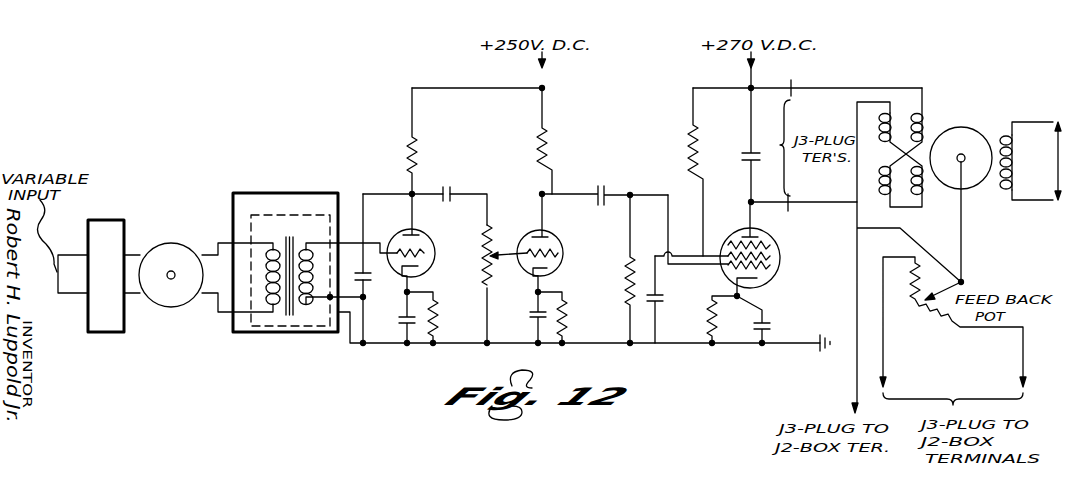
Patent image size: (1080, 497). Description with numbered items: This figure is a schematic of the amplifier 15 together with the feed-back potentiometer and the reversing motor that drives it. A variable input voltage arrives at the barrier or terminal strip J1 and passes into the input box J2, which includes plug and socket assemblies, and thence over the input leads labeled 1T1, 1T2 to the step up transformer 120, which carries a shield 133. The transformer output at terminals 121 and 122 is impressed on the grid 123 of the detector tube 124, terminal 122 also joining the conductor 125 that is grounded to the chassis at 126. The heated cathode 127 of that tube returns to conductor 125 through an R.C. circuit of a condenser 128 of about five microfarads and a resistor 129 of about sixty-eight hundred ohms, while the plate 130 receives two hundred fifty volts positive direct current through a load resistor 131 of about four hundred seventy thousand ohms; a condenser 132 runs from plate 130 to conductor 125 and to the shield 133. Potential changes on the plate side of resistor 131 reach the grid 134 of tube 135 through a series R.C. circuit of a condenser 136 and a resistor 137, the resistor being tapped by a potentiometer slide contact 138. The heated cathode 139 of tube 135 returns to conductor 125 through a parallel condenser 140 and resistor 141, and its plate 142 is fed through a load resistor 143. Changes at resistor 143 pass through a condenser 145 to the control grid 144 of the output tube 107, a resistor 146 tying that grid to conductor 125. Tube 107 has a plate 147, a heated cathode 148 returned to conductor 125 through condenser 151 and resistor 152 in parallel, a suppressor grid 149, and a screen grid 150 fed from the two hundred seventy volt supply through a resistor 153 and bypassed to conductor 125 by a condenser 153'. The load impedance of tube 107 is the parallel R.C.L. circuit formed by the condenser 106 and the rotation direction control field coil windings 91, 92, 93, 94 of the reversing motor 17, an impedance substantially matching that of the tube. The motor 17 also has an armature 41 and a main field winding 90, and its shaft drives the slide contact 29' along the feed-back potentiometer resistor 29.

The barrier or terminal strip J1 is at (117, 220).
The input box J2 is at (180, 246).
The transformer primary terminal 1T1 is at (229, 228).
The transformer primary terminal 1T2 is at (219, 312).
The step up transformer 120 is at (300, 236).
The shield 133 is at (289, 214).
The transformer terminal 121 is at (361, 240).
The condenser 132 is at (363, 272).
The transformer terminal 122 is at (349, 342).
The conductor 125 is at (483, 344).
The load resistor 131 is at (418, 150).
The plate 130 is at (404, 234).
The detector tube 124 is at (437, 227).
The grid 123 is at (427, 250).
The heated cathode 127 is at (417, 267).
The condenser 128 is at (401, 321).
The resistor 129 is at (437, 305).
The condenser 136 is at (450, 194).
The resistor 137 is at (486, 260).
The potentiometer slide contact 138 is at (492, 262).
The load resistor 143 is at (548, 143).
The amplifier 15 is at (631, 117).
The condenser 145 is at (606, 190).
The plate 142 is at (537, 233).
The tube 135 is at (549, 236).
The grid 134 is at (558, 250).
The heated cathode 139 is at (548, 272).
The condenser 140 is at (530, 315).
The resistor 141 is at (567, 312).
The resistor 146 is at (626, 290).
The resistor 153 is at (676, 172).
The condenser 106 is at (744, 154).
The screen grid 150 is at (726, 245).
The plate 147 is at (745, 237).
The suppressor grid 149 is at (760, 247).
The tube 107 is at (781, 256).
The control grid 144 is at (720, 275).
The condenser 153' is at (678, 299).
The heated cathode 148 is at (757, 282).
The resistor 152 is at (708, 319).
The condenser 151 is at (772, 325).
The chassis ground 126 is at (817, 348).
The rotation direction control field coil winding 91 is at (881, 132).
The rotation direction control field coil winding 92 is at (924, 191).
The rotation direction control field coil winding 93 is at (924, 126).
The rotation direction control field coil winding 94 is at (886, 198).
The reversing motor 17 is at (975, 115).
The armature 41 is at (976, 138).
The main field winding 90 is at (1012, 183).
The feed-back potentiometer resistor 29 is at (953, 322).
The slide contact 29' is at (943, 265).